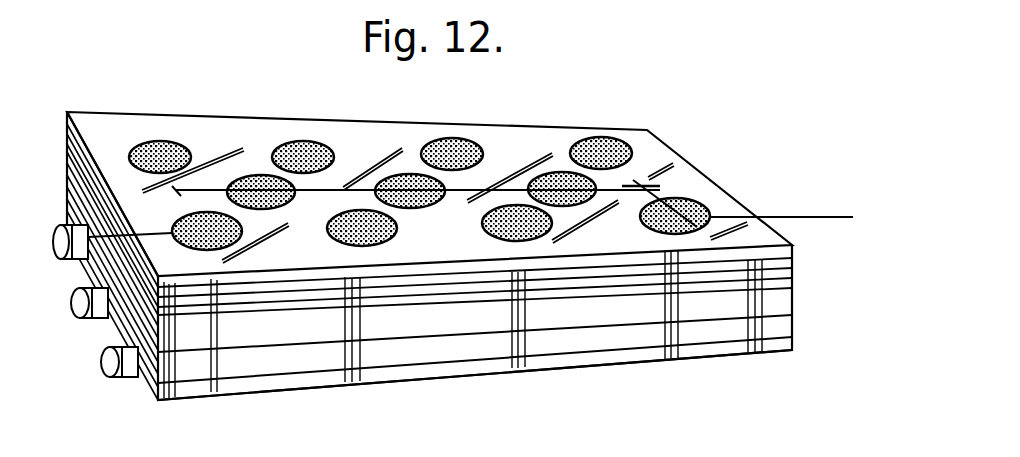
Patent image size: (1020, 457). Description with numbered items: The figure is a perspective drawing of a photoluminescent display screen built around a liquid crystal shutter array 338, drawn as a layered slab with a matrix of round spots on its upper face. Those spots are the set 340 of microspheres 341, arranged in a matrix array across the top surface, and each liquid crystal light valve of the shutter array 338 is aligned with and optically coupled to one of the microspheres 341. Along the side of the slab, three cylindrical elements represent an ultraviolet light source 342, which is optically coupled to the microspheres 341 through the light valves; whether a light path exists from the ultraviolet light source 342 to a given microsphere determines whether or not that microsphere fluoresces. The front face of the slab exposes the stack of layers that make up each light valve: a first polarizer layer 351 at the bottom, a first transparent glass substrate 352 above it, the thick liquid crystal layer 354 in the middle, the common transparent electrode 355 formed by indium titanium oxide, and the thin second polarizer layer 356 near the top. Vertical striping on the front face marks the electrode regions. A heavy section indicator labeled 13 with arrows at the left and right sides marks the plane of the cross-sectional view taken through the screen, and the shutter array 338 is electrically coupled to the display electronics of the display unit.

The liquid crystal shutter array 338 is at (687, 139).
The set of microspheres 340 is at (723, 200).
The microspheres 341 is at (397, 228).
The ultraviolet light source 342 is at (95, 318).
The first polarizer layer 351 is at (768, 348).
The first transparent glass substrate 352 is at (780, 325).
The liquid crystal layer 354 is at (637, 308).
The common transparent electrode 355 is at (545, 298).
The second polarizer layer 356 is at (273, 288).
The section view indicator 13 is at (108, 254).